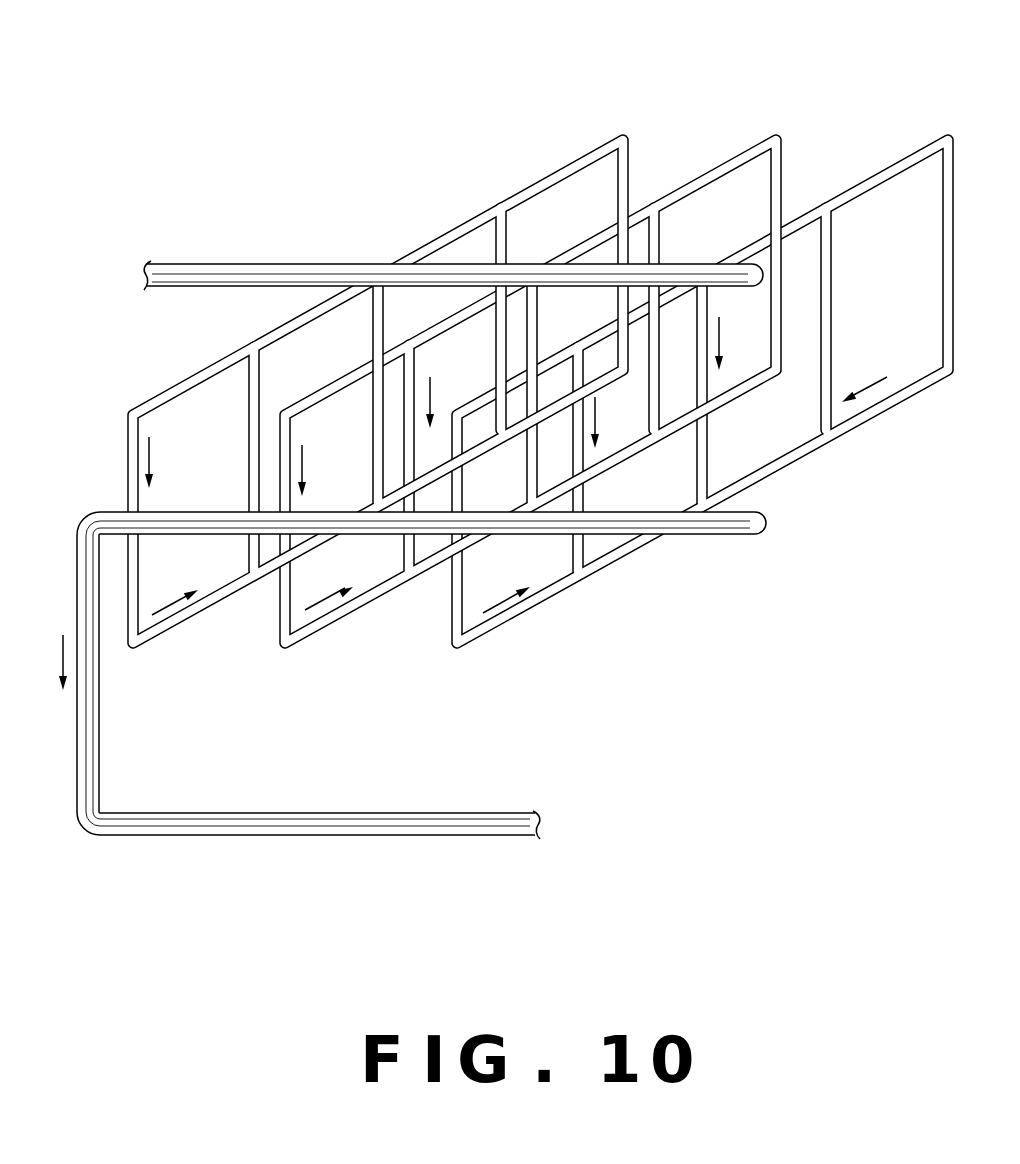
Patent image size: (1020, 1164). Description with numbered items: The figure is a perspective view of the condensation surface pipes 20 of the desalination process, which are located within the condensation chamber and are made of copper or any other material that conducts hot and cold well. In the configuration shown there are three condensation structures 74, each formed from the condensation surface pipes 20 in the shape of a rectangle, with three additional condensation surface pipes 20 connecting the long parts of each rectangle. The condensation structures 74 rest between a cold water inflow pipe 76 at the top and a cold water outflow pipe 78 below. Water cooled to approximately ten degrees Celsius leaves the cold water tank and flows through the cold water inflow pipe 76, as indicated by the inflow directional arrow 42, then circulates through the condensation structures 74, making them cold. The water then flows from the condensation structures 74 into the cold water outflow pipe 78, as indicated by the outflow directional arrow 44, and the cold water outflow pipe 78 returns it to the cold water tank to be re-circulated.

The condensation surface pipes 20 is at (455, 235).
The inflow directional arrow 42 is at (210, 253).
The outflow directional arrow 44 is at (350, 800).
The condensation structures 74 is at (623, 136).
The cold water inflow pipe 76 is at (287, 263).
The cold water outflow pipe 78 is at (85, 747).